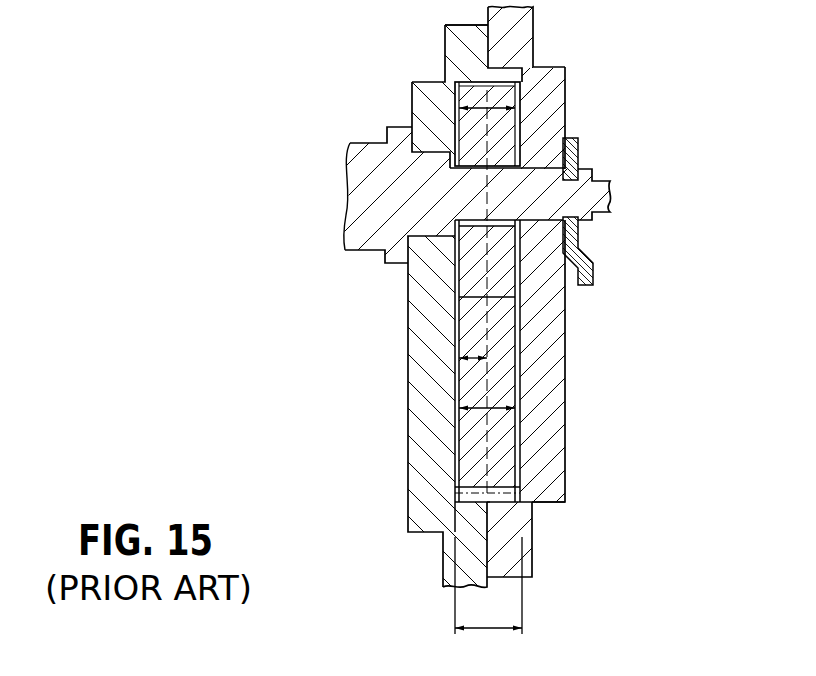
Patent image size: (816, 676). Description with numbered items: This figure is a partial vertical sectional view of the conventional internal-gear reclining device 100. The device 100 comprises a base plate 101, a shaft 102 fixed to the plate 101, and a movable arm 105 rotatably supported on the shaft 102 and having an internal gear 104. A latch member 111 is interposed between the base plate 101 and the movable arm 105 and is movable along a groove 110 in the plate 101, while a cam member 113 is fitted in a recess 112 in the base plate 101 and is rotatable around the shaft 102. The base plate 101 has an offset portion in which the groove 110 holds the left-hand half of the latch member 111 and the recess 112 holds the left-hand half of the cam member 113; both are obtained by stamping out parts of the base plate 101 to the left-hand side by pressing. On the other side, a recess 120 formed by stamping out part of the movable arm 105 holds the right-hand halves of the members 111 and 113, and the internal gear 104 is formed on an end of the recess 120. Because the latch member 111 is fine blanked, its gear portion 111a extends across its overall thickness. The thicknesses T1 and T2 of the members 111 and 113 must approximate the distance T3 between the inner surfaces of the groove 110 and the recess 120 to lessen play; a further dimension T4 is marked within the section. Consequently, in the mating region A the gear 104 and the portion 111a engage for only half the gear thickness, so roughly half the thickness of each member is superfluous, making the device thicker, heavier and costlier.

The internal-gear reclining device 100 is at (320, 115).
The base plate 101 is at (408, 466).
The shaft 102 is at (356, 206).
The internal gear 104 is at (530, 505).
The movable arm 105 is at (566, 331).
The groove 110 is at (462, 317).
The latch member 111 is at (462, 437).
The gear portion 111a is at (472, 505).
The recess 112 is at (462, 86).
The cam member 113 is at (467, 127).
The recess 120 is at (517, 376).
The thickness of latch member T1 is at (497, 413).
The thickness of cam member T2 is at (494, 112).
The distance between inner surfaces of groove and recess T3 is at (488, 585).
The thickness T4 is at (462, 366).
The mating region A is at (489, 504).